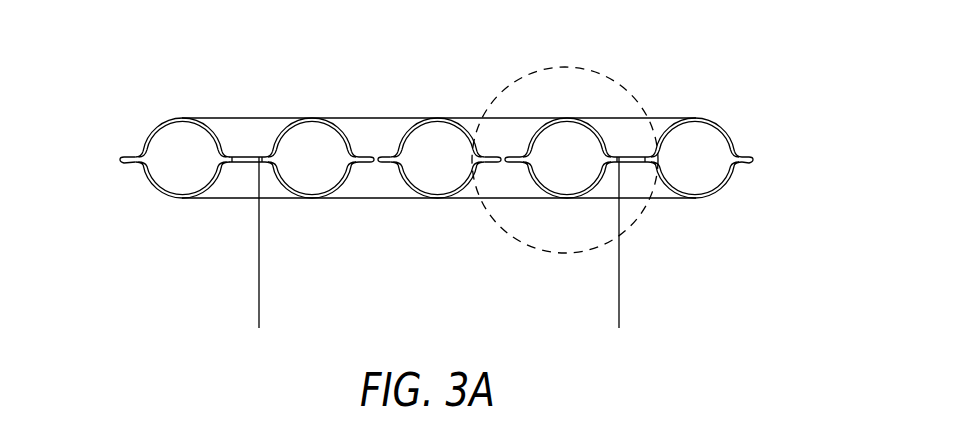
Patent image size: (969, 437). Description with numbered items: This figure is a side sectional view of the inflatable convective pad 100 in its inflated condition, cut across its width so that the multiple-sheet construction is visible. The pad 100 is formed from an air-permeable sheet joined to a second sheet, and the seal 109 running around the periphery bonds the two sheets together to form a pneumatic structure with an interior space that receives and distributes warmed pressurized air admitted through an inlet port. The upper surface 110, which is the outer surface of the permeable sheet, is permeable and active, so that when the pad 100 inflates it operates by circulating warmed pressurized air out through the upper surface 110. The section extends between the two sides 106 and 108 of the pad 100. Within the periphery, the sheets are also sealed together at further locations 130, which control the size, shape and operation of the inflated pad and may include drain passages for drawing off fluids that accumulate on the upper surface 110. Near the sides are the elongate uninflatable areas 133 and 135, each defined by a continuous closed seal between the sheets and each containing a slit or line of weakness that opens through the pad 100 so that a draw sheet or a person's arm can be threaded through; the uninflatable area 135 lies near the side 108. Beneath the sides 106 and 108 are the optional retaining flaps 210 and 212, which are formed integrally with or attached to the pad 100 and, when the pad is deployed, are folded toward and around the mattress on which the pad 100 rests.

The inflatable convective pad 100 is at (431, 171).
The side 106 is at (128, 145).
The side 108 is at (727, 107).
The seal 109 is at (128, 164).
The upper surface 110 is at (360, 128).
The seal locations 130 is at (502, 162).
The elongate uninflatable area 133 is at (247, 157).
The elongate uninflatable area 135 is at (631, 157).
The retaining flap 210 is at (259, 280).
The retaining flap 212 is at (619, 290).